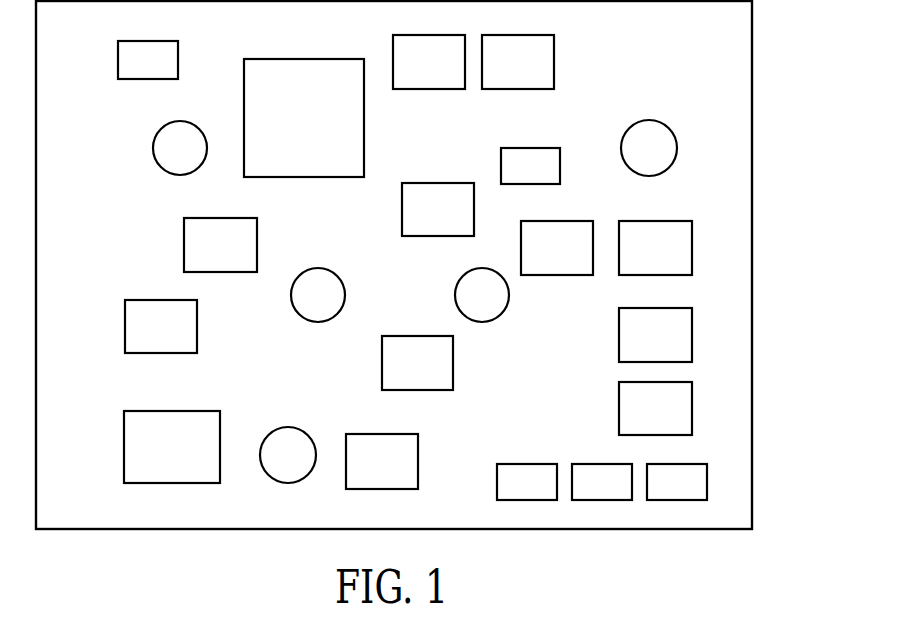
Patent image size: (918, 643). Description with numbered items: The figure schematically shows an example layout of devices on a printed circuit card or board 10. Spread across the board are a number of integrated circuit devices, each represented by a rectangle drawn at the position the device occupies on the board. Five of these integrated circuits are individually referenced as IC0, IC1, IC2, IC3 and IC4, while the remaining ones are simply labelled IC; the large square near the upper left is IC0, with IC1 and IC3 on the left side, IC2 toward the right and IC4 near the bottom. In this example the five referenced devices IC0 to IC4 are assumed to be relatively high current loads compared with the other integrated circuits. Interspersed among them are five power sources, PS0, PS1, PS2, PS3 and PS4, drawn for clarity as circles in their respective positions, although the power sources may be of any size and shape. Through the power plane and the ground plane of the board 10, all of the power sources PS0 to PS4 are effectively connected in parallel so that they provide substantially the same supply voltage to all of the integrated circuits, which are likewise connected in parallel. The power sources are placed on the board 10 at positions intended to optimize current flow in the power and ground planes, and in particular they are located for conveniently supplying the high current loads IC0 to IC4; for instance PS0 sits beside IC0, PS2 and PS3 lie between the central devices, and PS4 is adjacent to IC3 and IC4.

The printed circuit card or board 10 is at (438, 265).
The integrated circuit IC0 is at (304, 118).
The integrated circuit IC1 is at (220, 245).
The integrated circuit IC2 is at (557, 248).
The integrated circuit IC3 is at (172, 447).
The integrated circuit IC4 is at (382, 461).
The power source PS0 is at (180, 148).
The power source PS1 is at (649, 148).
The power source PS2 is at (318, 295).
The power source PS3 is at (482, 295).
The power source PS4 is at (288, 455).